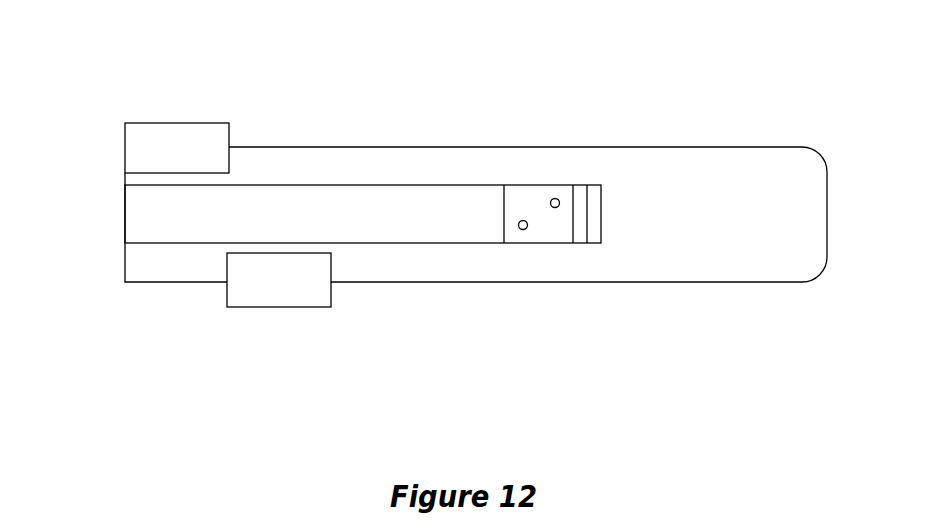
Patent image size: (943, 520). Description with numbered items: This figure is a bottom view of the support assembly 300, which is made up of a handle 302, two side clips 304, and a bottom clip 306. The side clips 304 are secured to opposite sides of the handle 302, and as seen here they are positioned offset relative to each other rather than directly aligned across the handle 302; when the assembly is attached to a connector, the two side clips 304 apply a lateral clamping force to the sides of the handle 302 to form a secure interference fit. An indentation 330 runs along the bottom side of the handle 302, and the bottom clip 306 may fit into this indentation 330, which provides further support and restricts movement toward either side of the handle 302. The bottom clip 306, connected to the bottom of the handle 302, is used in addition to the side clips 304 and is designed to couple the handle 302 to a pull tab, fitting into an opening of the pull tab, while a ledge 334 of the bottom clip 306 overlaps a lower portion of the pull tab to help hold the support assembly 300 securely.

The support assembly 300 is at (138, 77).
The handle 302 is at (744, 219).
The side clips 304 is at (198, 166).
The bottom clip 306 is at (544, 135).
The indentation 330 is at (120, 211).
The ledge 334 is at (592, 304).